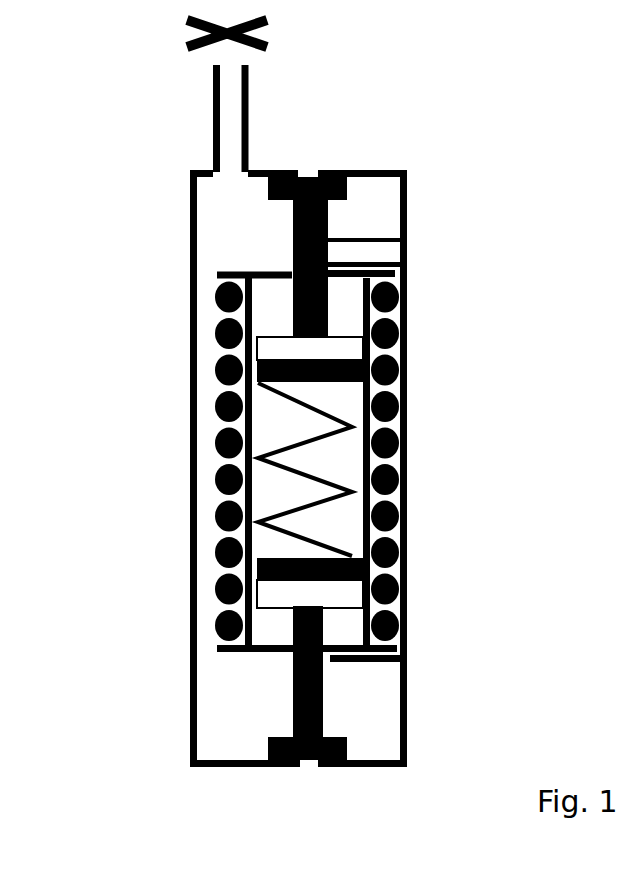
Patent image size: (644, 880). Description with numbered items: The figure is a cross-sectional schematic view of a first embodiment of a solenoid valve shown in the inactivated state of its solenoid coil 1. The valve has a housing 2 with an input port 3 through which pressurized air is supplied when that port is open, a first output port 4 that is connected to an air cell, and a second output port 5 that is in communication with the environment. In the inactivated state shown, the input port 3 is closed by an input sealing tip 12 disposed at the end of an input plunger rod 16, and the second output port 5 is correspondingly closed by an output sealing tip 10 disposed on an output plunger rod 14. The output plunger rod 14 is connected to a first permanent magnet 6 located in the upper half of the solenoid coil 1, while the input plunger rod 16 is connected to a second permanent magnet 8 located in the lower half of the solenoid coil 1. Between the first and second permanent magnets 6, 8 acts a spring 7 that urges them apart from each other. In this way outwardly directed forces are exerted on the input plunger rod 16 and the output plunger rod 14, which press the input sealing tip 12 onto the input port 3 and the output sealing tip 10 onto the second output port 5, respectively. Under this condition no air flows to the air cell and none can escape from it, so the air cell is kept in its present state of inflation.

The solenoid coil 1 is at (215, 297).
The housing 2 is at (407, 708).
The input port 3 is at (310, 768).
The first output port 4 is at (213, 87).
The second output port 5 is at (320, 165).
The first permanent magnet 6 is at (277, 333).
The spring 7 is at (253, 458).
The second permanent magnet 8 is at (270, 608).
The output sealing tip 10 is at (347, 188).
The input sealing tip 12 is at (347, 752).
The output plunger rod 14 is at (407, 240).
The input plunger rod 16 is at (323, 675).